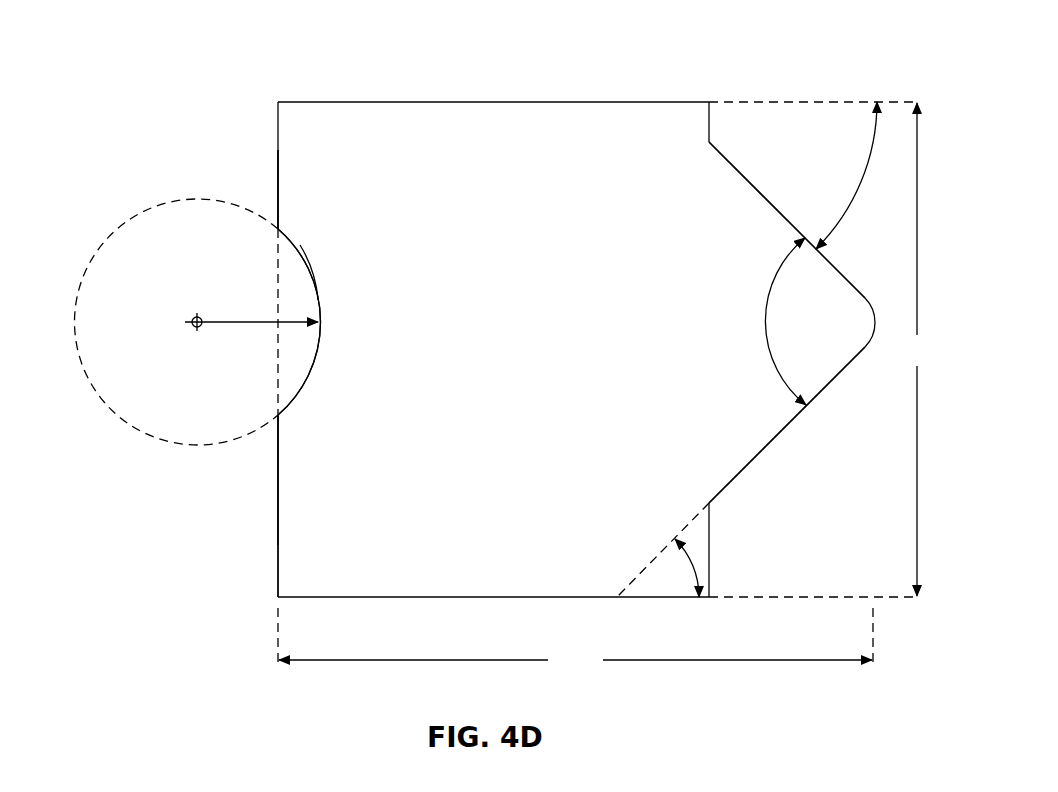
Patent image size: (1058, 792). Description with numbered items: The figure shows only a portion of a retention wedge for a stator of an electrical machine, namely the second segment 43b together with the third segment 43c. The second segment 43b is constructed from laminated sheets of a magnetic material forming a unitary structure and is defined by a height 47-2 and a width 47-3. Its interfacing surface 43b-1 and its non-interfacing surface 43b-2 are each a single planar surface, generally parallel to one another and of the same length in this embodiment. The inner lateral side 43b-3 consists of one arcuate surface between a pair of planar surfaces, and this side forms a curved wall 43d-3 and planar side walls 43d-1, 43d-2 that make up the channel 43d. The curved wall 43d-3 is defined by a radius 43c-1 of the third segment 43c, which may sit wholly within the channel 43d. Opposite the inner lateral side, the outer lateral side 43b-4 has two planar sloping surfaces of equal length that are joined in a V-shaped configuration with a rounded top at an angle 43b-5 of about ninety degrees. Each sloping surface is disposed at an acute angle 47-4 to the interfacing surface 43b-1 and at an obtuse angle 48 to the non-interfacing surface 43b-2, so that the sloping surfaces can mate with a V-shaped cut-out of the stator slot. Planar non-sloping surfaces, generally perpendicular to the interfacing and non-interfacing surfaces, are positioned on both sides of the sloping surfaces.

The second segment 43b is at (537, 291).
The interfacing surface 43b-1 is at (465, 597).
The non-interfacing surface 43b-2 is at (533, 102).
The second segment inner lateral side 43b-3 is at (284, 485).
The second segment outer lateral side 43b-4 is at (758, 185).
The angle 43b-5 is at (766, 318).
The third segment 43c is at (137, 217).
The radius 43c-1 is at (260, 320).
The channel 43d is at (298, 260).
The planar side wall 43d-1 is at (277, 165).
The planar side wall 43d-2 is at (277, 533).
The curved wall 43d-3 is at (318, 300).
The height 47-2 is at (825, 349).
The width 47-3 is at (575, 640).
The acute angle 47-4 is at (672, 543).
The obtuse angle 48 is at (843, 213).